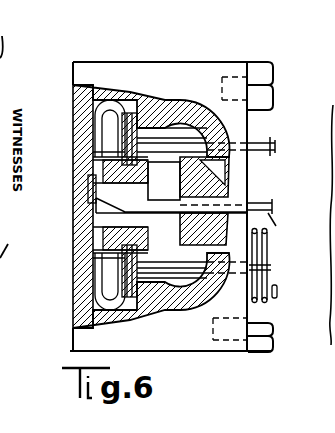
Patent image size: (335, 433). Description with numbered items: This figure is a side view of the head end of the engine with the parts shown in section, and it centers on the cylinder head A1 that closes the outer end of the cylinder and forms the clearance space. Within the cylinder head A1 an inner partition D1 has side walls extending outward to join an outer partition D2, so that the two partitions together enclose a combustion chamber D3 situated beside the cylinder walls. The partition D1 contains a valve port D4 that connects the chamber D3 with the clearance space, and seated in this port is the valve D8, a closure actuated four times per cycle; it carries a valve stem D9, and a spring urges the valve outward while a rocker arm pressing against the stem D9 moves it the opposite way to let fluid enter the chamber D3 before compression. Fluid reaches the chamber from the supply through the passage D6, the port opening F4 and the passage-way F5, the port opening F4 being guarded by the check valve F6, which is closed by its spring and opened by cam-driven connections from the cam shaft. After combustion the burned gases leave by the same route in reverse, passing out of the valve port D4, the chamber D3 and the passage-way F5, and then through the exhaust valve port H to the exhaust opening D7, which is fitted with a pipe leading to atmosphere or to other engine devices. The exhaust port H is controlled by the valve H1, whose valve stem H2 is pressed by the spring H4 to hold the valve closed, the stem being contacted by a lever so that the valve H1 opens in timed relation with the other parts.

The cylinder head A1 is at (175, 68).
The passage-way F5 is at (96, 95).
The check valve F6 is at (128, 138).
The port opening F4 is at (152, 130).
The passage D6 is at (193, 120).
The partition D1 is at (102, 158).
The chamber D3 is at (164, 181).
The valve D8 is at (88, 186).
The valve port D4 is at (133, 188).
The valve stem D9 is at (275, 220).
The partition D2 is at (205, 178).
The exhaust opening D7 is at (183, 283).
The valve port H is at (147, 280).
The valve H1 is at (118, 278).
The valve stem H2 is at (262, 272).
The spring H4 is at (277, 291).